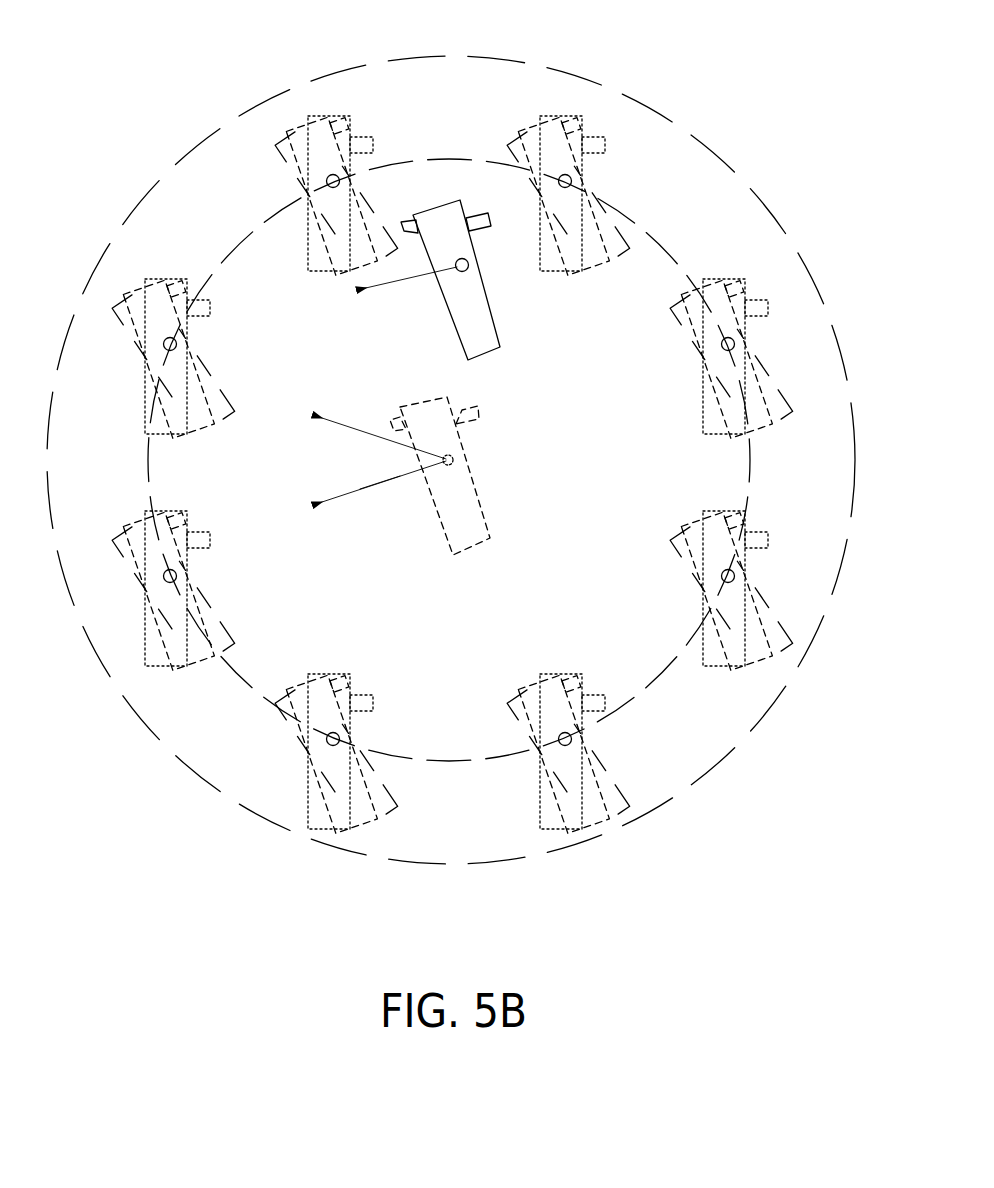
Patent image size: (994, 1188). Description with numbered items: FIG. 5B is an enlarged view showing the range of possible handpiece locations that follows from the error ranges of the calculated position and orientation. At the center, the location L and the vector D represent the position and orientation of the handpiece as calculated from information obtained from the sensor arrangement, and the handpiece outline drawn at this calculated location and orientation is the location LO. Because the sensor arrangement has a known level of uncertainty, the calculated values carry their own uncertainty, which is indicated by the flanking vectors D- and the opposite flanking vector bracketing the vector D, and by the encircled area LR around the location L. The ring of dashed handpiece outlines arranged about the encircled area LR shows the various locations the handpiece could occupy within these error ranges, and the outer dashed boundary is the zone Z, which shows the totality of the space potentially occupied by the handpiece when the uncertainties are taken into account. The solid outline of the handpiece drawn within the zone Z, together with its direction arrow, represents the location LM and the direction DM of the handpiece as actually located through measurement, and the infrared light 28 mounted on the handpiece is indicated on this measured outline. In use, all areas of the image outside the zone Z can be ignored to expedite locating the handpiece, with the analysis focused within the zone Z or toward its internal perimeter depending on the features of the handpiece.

The light 28 is at (404, 221).
The zone Z is at (648, 107).
The encircled area LR is at (663, 250).
The measured location of the handpiece LM is at (468, 265).
The measured direction of the handpiece DM is at (407, 294).
The location L is at (454, 460).
The calculated location and orientation of the handpiece LO is at (482, 517).
The flanking vector D- is at (379, 423).
The vector D is at (365, 480).